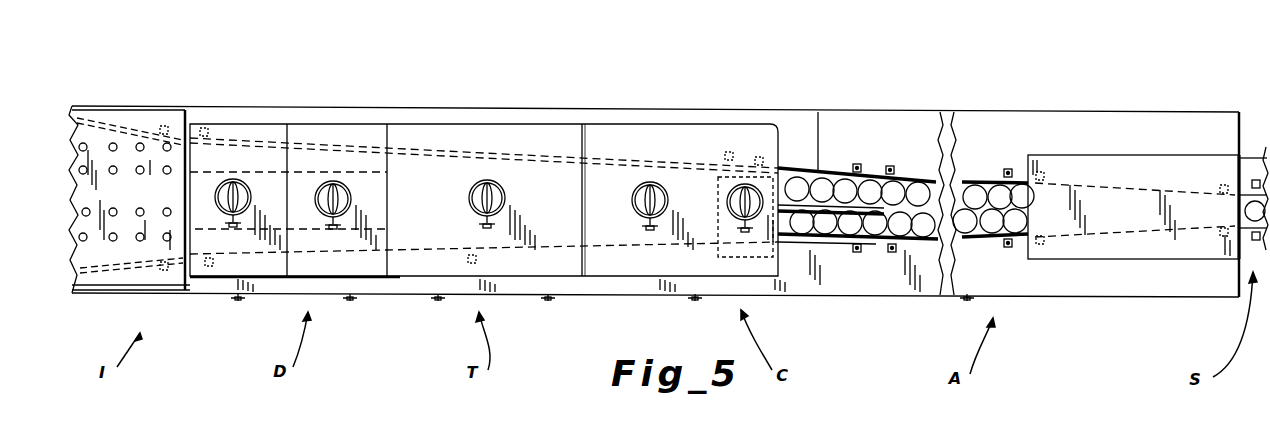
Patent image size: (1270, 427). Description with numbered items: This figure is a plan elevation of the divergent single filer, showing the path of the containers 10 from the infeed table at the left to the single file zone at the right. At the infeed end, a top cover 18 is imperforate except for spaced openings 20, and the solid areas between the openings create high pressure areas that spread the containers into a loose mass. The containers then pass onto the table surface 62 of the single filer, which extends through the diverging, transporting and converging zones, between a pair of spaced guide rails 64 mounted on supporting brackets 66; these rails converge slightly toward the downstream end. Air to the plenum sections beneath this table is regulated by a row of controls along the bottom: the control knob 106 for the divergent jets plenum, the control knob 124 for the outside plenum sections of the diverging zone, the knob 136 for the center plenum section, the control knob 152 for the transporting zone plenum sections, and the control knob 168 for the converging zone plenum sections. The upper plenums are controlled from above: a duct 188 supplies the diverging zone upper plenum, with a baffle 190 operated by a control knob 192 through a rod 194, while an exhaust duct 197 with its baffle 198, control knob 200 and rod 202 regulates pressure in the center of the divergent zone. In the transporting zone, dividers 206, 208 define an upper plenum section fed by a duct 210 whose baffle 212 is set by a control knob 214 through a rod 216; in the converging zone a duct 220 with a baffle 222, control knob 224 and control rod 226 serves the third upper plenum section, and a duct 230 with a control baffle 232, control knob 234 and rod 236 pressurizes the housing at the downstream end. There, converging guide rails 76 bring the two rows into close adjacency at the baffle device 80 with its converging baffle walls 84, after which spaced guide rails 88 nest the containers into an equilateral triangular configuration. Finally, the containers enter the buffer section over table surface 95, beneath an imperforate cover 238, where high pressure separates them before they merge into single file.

The container 10 is at (843, 183).
The top cover 18 is at (131, 108).
The opening 20 is at (140, 208).
The table surface 62 is at (536, 110).
The guide rail 64 is at (324, 141).
The supporting bracket 66 is at (470, 140).
The guide rail 76 is at (790, 176).
The baffle device 80 is at (791, 168).
The converging baffle wall 84 is at (826, 180).
The guide rail 88 is at (983, 186).
The table surface 95 is at (1010, 118).
The control knob 106 is at (237, 300).
The control knob 124 is at (351, 303).
The knob 136 is at (438, 301).
The control knob 152 is at (548, 301).
The control knob 168 is at (695, 300).
The duct 188 is at (242, 180).
The baffle 190 is at (246, 190).
The control knob 192 is at (190, 286).
The rod 194 is at (228, 224).
The exhaust duct 197 is at (338, 182).
The baffle 198 is at (333, 182).
The control knob 200 is at (328, 227).
The rod 202 is at (262, 278).
The divider 206 is at (352, 302).
The divider 208 is at (572, 208).
The duct 210 is at (497, 183).
The baffle 212 is at (480, 183).
The control knob 214 is at (487, 227).
The rod 216 is at (487, 227).
The duct 220 is at (641, 183).
The baffle 222 is at (636, 192).
The control knob 224 is at (650, 230).
The control rod 226 is at (647, 226).
The duct 230 is at (728, 196).
The control baffle 232 is at (743, 185).
The control knob 234 is at (798, 246).
The rod 236 is at (745, 230).
The imperforate cover 238 is at (1163, 156).